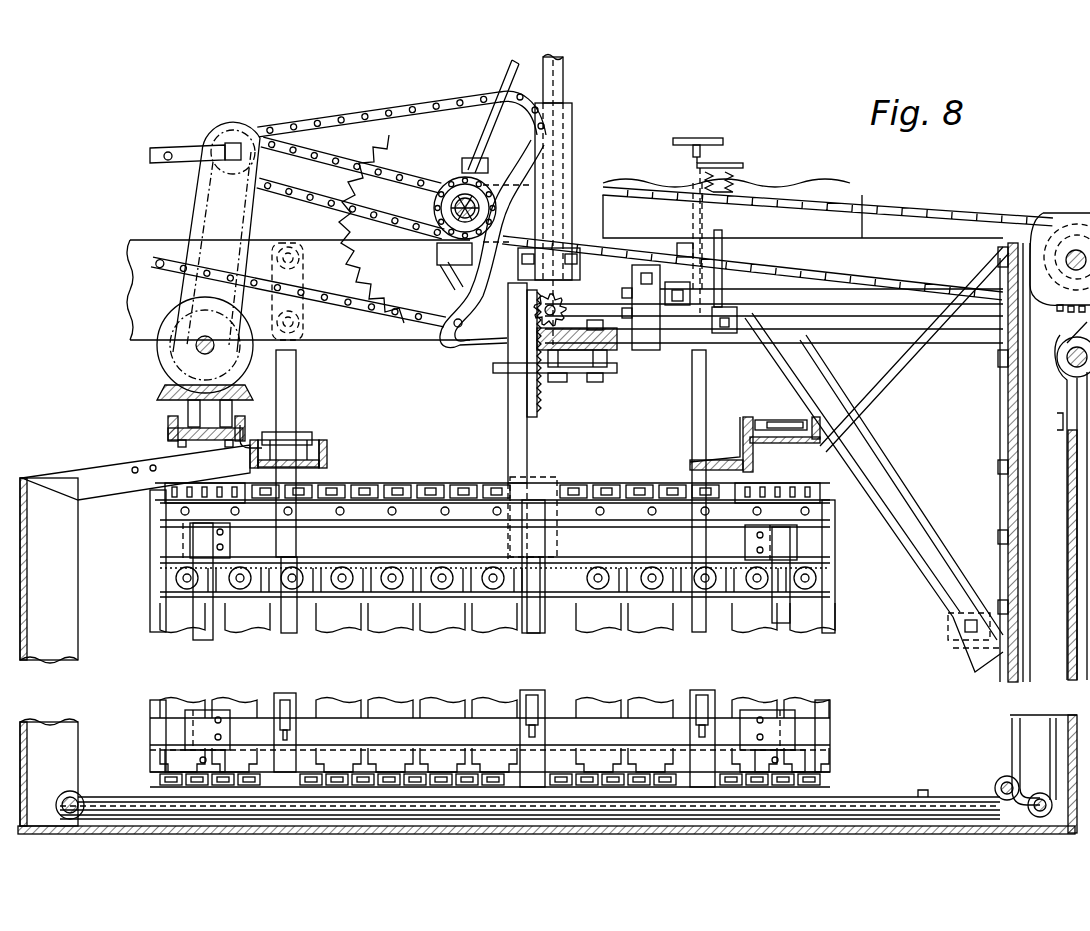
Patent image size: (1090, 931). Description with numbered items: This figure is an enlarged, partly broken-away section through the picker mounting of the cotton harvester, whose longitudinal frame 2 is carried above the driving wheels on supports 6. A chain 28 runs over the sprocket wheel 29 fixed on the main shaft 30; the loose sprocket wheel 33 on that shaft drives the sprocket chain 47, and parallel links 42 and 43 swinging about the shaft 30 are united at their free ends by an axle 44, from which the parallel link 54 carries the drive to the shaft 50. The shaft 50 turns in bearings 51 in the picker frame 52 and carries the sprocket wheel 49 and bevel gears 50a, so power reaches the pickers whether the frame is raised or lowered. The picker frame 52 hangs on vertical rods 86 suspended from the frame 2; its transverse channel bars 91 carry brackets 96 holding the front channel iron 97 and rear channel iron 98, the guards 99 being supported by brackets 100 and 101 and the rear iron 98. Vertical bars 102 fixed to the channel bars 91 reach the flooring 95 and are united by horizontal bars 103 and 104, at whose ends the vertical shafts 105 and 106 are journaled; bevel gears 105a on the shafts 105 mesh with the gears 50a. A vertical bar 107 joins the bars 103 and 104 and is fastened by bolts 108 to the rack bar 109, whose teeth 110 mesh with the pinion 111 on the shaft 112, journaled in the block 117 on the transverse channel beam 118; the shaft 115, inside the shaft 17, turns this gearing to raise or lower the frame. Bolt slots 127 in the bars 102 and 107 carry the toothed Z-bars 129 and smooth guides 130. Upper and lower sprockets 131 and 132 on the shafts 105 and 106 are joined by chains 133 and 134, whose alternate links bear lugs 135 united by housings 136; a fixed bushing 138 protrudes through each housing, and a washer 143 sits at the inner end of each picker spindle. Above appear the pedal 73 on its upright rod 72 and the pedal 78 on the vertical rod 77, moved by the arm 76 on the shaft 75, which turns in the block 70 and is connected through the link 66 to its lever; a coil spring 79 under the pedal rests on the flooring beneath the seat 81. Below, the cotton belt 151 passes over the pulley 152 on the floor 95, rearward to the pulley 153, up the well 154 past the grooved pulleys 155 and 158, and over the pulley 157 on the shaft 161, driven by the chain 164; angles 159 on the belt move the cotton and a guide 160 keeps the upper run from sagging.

The longitudinal frame 2 is at (130, 290).
The supports 6 is at (897, 483).
The shaft 17 is at (560, 156).
The chain 28 is at (352, 120).
The sprocket wheel 29 is at (489, 232).
The main shaft 30 is at (437, 250).
The sprocket wheel 33 is at (436, 207).
The parallel link 42 is at (300, 165).
The parallel link 43 is at (300, 258).
The axle 44 is at (225, 150).
The sprocket chain 47 is at (372, 162).
The sprocket wheel 49 is at (219, 248).
The shaft 50 is at (195, 350).
The bevel gears 50a is at (162, 338).
The bearings 51 is at (232, 412).
The picker frame 52 is at (165, 435).
The parallel link 54 is at (205, 212).
The link 66 is at (825, 292).
The bearings 70 is at (633, 286).
The valve stem 72 is at (692, 158).
The pedal 73 is at (697, 135).
The shaft 75 is at (858, 322).
The arm 76 is at (730, 310).
The rod 77 is at (723, 223).
The pedal 78 is at (740, 162).
The coil spring 79 is at (735, 186).
The seat 81 is at (858, 195).
The rods 86 is at (297, 382).
The channel bars 91 is at (690, 452).
The flooring 95 is at (546, 835).
The brackets 96 is at (300, 440).
The channel iron 97 is at (168, 426).
The channel iron 98 is at (757, 417).
The guards 99 is at (72, 640).
The bracket 100 is at (130, 465).
The bracket 101 is at (918, 397).
The bars 102 is at (292, 545).
The bar 103 is at (432, 515).
The bar 104 is at (494, 723).
The shaft 105 is at (203, 640).
The bevel gears 105a is at (157, 396).
The shaft 106 is at (788, 623).
The bar 107 is at (445, 668).
The bolts 108 is at (545, 543).
The rack bar 109 is at (505, 431).
The teeth 110 is at (537, 400).
The pinion 111 is at (563, 306).
The shaft 112 is at (592, 315).
The shaft 115 is at (563, 81).
The block 117 is at (621, 306).
The channel beam 118 is at (620, 375).
The bolt slots 127 is at (288, 693).
The Z-angle metal bars 129 is at (392, 568).
The Z-angle metal bars 130 is at (410, 592).
The sprocket wheels 131 is at (805, 480).
The sprocket wheels 132 is at (185, 765).
The chain 133 is at (405, 483).
The chain 134 is at (640, 772).
The lugs 135 is at (475, 512).
The housings 136 is at (375, 700).
The bushing 138 is at (508, 70).
The washer 143 is at (825, 580).
The belt 151 is at (1003, 550).
The pulley 152 is at (78, 795).
The pulley 153 is at (1040, 793).
The well 154 is at (1003, 503).
The pulley 155 is at (1075, 340).
The pulley 157 is at (1066, 271).
The pulley 158 is at (995, 785).
The angles 159 is at (965, 672).
The guide 160 is at (860, 797).
The shaft 161 is at (1073, 250).
The chain 164 is at (965, 203).